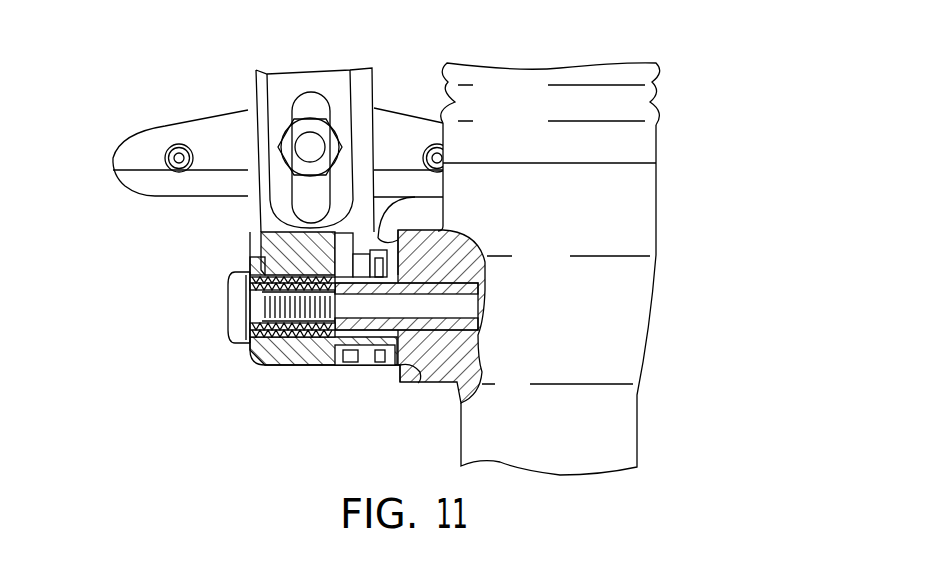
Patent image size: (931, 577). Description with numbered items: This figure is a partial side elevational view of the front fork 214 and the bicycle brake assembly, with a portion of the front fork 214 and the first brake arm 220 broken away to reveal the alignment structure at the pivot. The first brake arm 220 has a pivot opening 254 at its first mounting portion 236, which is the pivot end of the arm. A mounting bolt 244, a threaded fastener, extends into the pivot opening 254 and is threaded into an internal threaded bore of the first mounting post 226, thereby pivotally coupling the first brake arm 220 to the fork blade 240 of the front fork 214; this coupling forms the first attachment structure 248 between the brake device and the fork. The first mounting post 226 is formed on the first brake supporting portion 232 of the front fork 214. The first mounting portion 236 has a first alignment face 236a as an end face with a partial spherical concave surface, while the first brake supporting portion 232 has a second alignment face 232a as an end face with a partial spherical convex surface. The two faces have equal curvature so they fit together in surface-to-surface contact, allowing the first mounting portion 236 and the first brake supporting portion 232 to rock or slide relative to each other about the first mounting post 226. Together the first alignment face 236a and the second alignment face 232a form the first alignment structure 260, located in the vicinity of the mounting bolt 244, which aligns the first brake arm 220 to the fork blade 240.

The front fork 214 is at (680, 108).
The first brake arm 220 is at (258, 90).
The first mounting post 226 is at (292, 345).
The first brake supporting portion 232 is at (438, 360).
The second alignment face 232a is at (398, 210).
The first mounting portion 236 is at (352, 370).
The first alignment face 236a is at (420, 383).
The fork blade 240 is at (610, 210).
The mounting bolt 244 is at (235, 325).
The first attachment structure 248 is at (210, 300).
The pivot opening 254 is at (231, 266).
The first alignment structure 260 is at (378, 400).